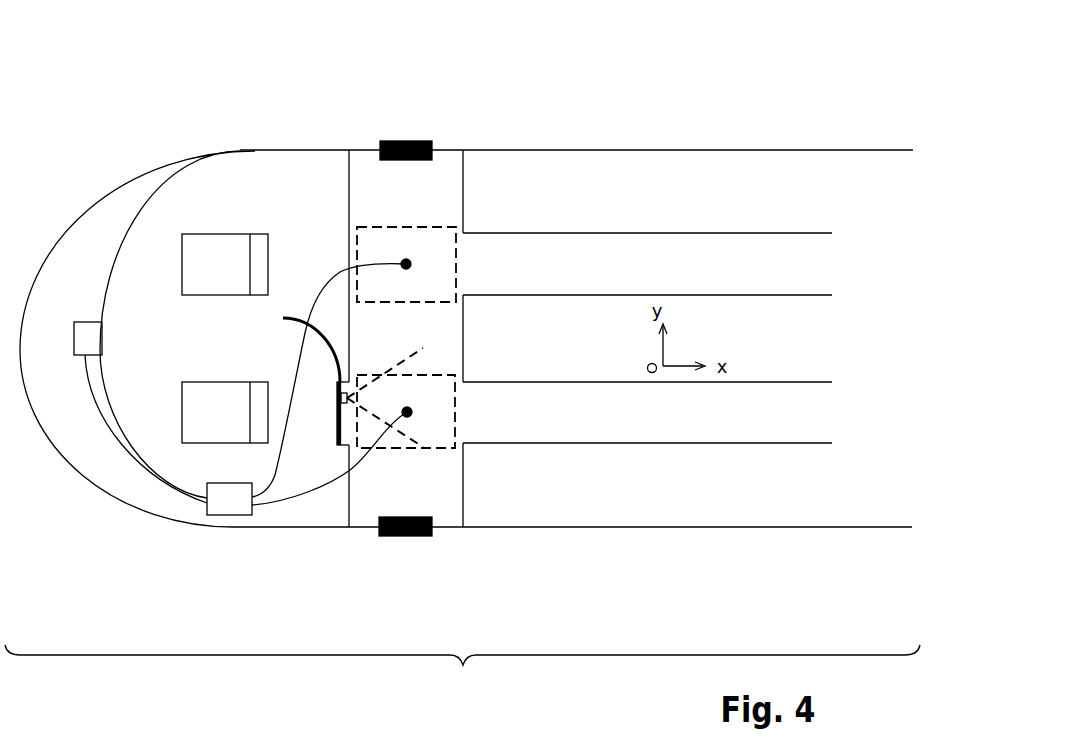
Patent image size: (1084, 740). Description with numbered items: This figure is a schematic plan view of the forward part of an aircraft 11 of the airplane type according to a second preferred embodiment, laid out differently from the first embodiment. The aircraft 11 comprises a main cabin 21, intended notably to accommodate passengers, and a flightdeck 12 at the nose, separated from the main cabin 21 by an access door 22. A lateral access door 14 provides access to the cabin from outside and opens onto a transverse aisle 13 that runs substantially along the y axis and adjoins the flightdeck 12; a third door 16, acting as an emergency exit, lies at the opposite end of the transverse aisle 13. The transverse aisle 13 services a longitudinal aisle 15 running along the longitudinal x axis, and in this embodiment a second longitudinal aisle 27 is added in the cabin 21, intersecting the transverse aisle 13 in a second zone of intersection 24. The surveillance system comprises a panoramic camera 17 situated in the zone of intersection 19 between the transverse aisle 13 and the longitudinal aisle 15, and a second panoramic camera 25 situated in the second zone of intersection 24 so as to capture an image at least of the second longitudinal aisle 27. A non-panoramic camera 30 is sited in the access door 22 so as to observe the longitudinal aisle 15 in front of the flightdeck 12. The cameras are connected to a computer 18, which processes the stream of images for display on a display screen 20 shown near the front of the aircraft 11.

The aircraft 11 is at (462, 425).
The flightdeck 12 is at (257, 207).
The transverse aisle 13 is at (440, 480).
The lateral access door 14 is at (408, 537).
The longitudinal aisle 15 is at (665, 413).
The third door 16 is at (407, 140).
The panoramic camera 17 is at (407, 425).
The computer 18 is at (228, 515).
The zone of intersection 19 is at (407, 412).
The display screen 20 is at (85, 325).
The main cabin 21 is at (743, 190).
The access door 22 is at (337, 408).
The second zone of intersection 24 is at (383, 225).
The second panoramic camera 25 is at (406, 264).
The second longitudinal aisle 27 is at (603, 260).
The non-panoramic camera 30 is at (284, 318).